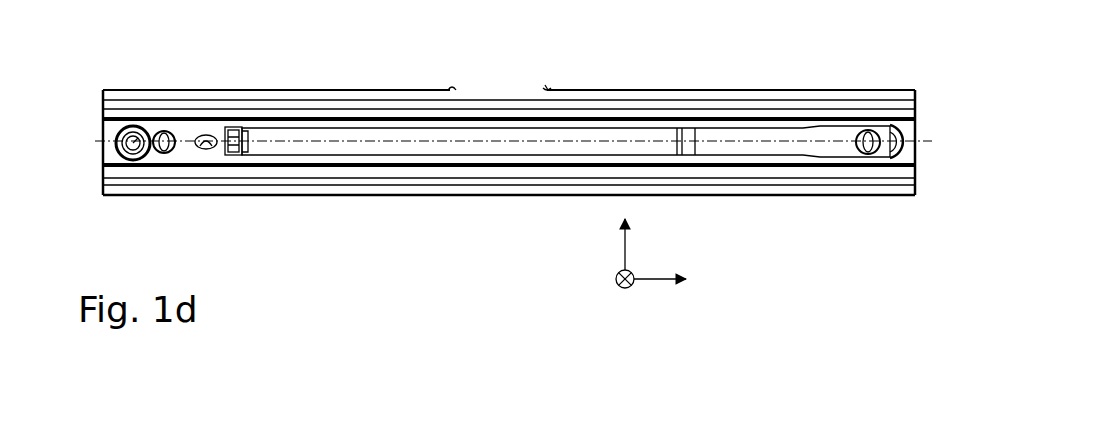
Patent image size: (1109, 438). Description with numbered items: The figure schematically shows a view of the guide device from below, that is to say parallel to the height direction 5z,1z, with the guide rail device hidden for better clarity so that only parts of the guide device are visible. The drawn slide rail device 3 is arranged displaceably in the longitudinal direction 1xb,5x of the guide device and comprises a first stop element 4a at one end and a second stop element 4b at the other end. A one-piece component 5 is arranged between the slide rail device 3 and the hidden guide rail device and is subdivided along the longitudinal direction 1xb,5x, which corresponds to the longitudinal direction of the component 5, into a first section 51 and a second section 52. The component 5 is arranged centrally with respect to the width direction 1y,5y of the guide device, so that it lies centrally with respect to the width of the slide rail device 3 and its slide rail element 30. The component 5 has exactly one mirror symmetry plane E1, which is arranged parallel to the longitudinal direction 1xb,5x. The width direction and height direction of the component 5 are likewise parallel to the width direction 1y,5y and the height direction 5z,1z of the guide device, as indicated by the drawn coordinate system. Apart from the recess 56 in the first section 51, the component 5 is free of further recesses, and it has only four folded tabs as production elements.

The slide rail device 3 is at (99, 148).
The first stop element 4a is at (133, 126).
The second stop element 4b is at (905, 141).
The one-piece component 5 is at (423, 148).
The slide rail element 30 is at (185, 153).
The mirror symmetry plane E1 is at (327, 150).
The second section 52 is at (496, 206).
The first section 51 is at (825, 208).
The recess 56 is at (861, 152).
The width direction 1y,5y is at (625, 243).
The height direction 5z,1z is at (617, 286).
The longitudinal direction 1xb,5x is at (663, 281).